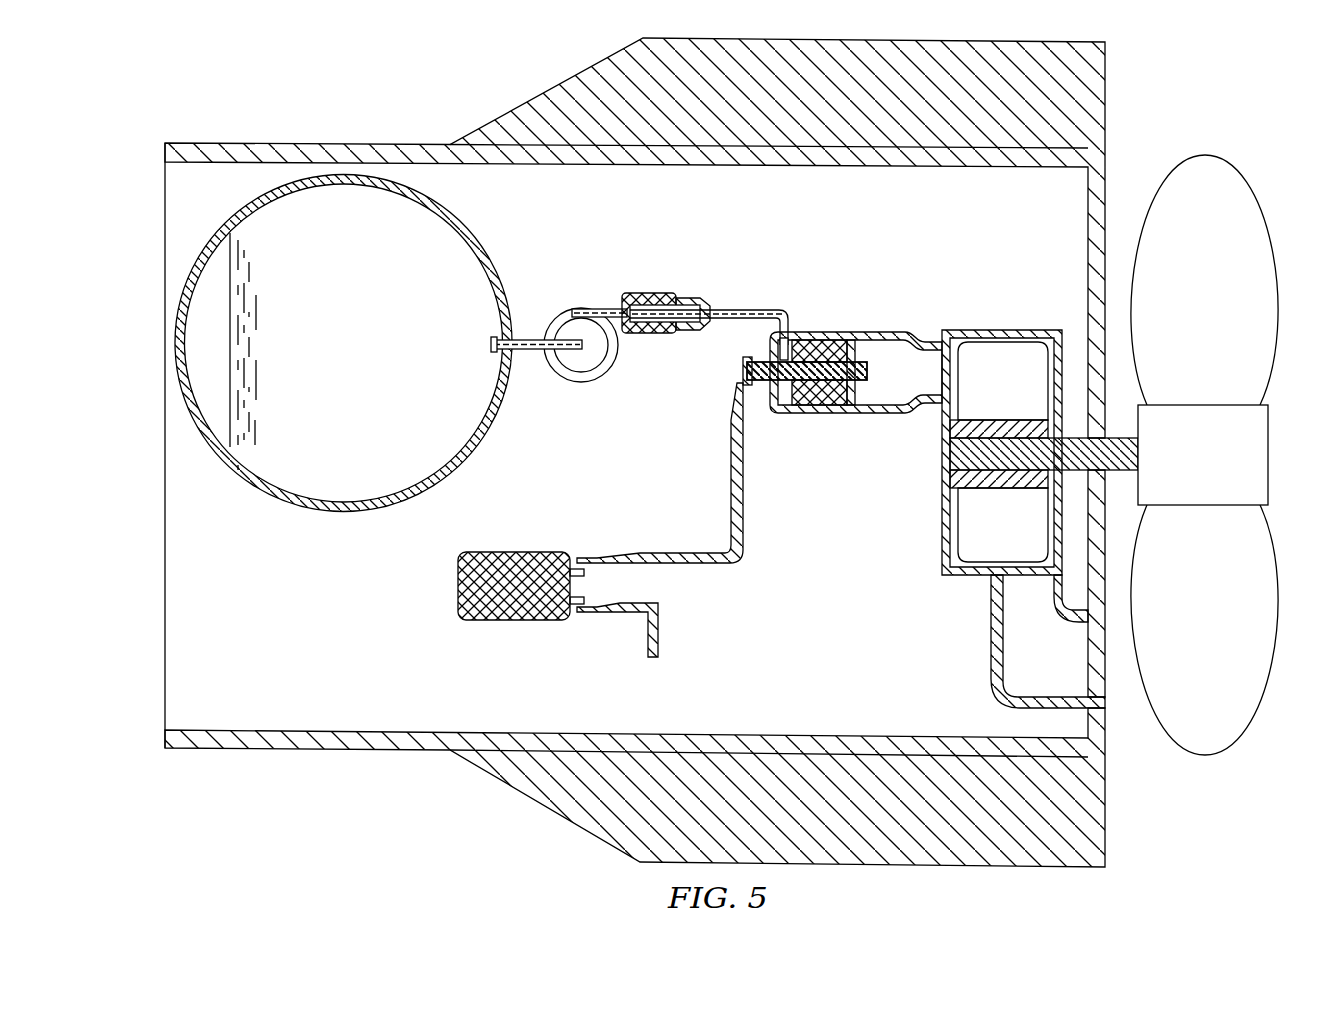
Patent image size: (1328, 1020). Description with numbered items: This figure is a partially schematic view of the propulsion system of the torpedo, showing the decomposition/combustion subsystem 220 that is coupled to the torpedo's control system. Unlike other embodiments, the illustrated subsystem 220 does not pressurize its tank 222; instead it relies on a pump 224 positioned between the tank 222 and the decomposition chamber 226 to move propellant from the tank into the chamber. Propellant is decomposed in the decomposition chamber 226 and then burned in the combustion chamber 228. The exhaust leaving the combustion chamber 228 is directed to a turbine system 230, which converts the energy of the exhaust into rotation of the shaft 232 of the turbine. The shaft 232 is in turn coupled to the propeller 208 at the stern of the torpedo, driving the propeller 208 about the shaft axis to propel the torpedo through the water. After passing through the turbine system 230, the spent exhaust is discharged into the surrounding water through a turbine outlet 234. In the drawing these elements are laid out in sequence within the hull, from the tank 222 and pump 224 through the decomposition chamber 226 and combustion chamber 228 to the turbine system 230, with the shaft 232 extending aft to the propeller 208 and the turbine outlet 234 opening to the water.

The propeller 208 is at (1150, 722).
The decomposition/combustion subsystem 220 is at (660, 258).
The tank 222 is at (480, 242).
The pump 224 is at (581, 355).
The decomposition chamber 226 is at (806, 396).
The combustion chamber 228 is at (918, 383).
The turbine system 230 is at (1038, 328).
The shaft 232 is at (1007, 460).
The turbine outlet 234 is at (1102, 662).